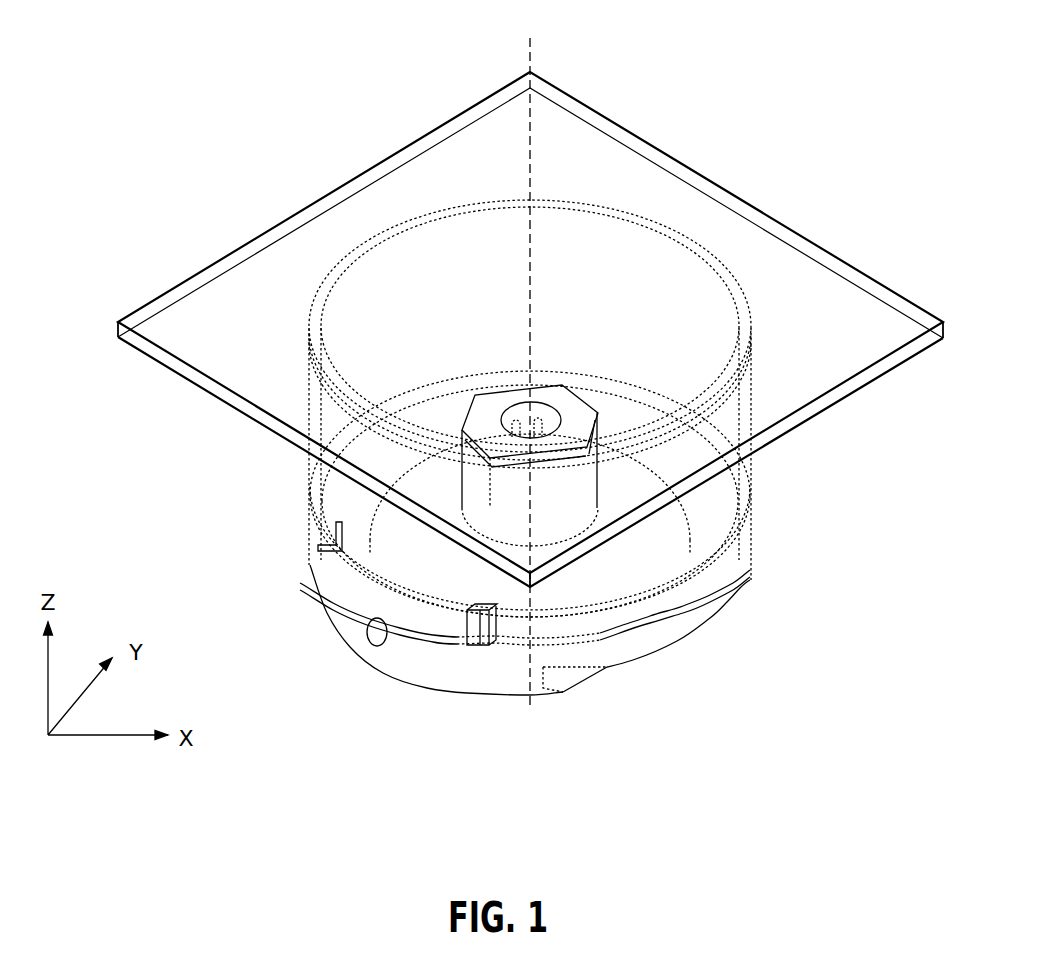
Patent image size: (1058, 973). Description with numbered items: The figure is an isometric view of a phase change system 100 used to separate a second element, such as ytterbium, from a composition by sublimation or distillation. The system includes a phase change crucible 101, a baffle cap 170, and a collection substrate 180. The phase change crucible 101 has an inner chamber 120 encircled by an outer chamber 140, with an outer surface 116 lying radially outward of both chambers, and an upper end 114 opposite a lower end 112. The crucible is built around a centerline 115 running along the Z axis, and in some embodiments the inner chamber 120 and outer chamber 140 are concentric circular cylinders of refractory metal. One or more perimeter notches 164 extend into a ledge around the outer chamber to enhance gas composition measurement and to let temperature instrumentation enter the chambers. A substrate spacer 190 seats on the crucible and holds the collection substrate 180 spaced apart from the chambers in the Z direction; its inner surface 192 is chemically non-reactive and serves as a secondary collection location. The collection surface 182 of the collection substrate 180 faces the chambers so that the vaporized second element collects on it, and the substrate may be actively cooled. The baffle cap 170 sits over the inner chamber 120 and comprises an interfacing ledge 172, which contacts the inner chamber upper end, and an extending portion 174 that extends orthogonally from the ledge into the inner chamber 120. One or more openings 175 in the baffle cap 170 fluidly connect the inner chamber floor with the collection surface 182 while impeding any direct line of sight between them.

The phase change system 100 is at (847, 112).
The phase change crucible 101 is at (613, 427).
The lower end 112 is at (398, 692).
The upper end 114 is at (425, 363).
The centerline 115 is at (540, 44).
The outer surface 116 is at (715, 603).
The inner chamber 120 is at (462, 465).
The outer chamber 140 is at (397, 457).
The perimeter notches 164 is at (753, 535).
The baffle cap 170 is at (498, 392).
The interfacing ledge 172 is at (528, 440).
The extending portion 174 is at (522, 415).
The openings 175 is at (538, 405).
The collection substrate 180 is at (877, 278).
The collection surface 182 is at (871, 397).
The substrate spacer 190 is at (310, 415).
The inner surface 192 is at (707, 328).